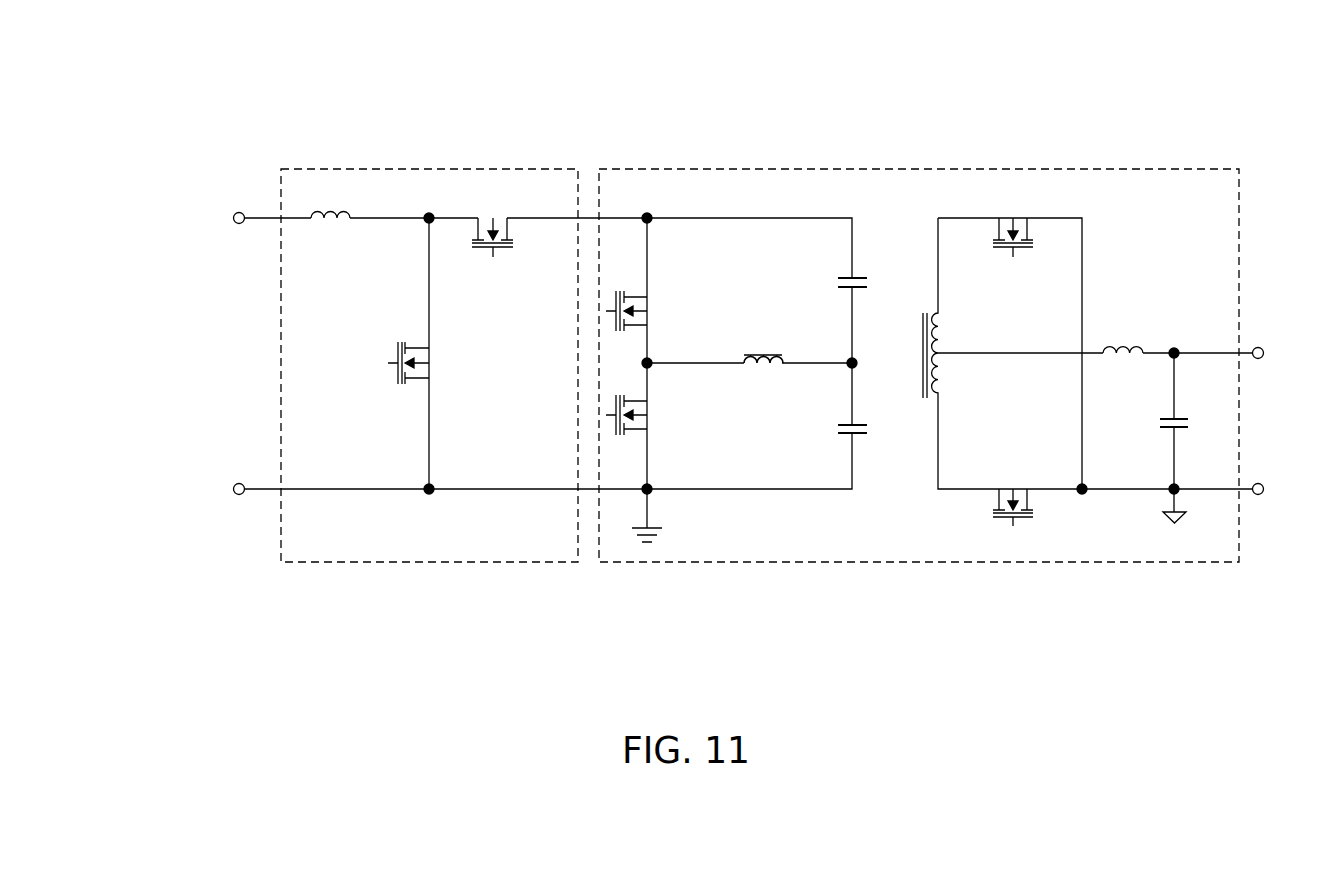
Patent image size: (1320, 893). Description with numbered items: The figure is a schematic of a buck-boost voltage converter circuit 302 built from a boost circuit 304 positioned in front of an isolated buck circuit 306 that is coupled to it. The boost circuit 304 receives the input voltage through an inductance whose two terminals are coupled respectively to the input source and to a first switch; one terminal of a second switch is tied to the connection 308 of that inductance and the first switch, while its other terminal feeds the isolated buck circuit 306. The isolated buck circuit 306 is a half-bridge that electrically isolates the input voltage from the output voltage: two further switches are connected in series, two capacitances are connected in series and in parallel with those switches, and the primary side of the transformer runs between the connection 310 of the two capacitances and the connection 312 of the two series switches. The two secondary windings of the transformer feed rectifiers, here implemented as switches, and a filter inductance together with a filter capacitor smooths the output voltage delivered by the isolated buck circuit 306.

The buck-boost voltage converter circuit 302 is at (297, 84).
The boost circuit 304 is at (445, 562).
The isolated buck circuit 306 is at (932, 169).
The connection 308 is at (429, 218).
The connection 310 is at (647, 363).
The connection 312 is at (852, 363).